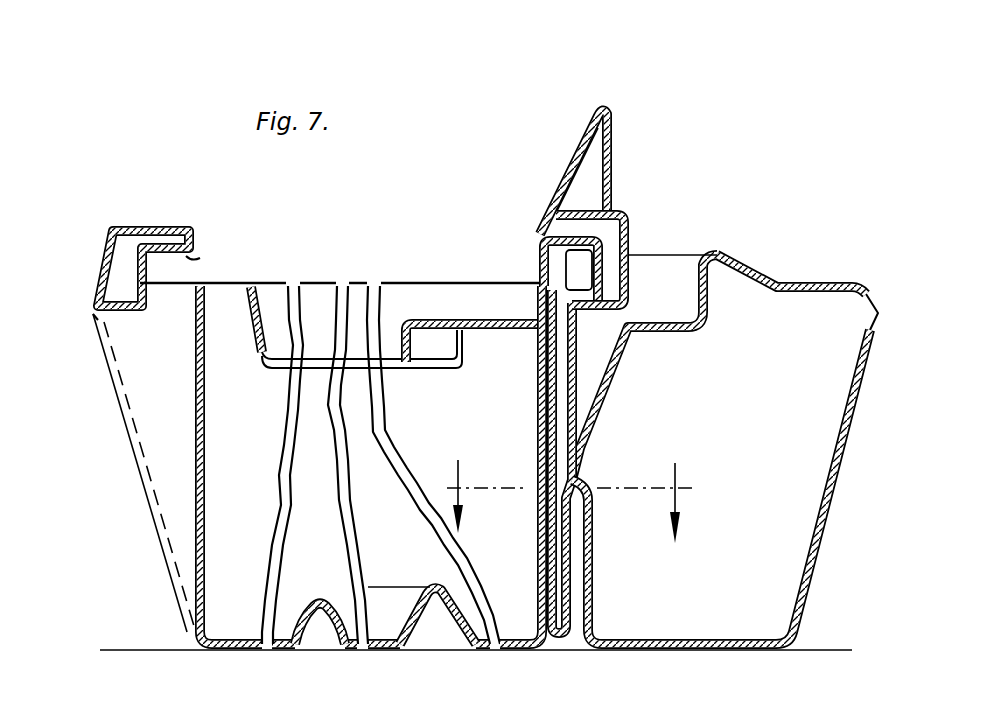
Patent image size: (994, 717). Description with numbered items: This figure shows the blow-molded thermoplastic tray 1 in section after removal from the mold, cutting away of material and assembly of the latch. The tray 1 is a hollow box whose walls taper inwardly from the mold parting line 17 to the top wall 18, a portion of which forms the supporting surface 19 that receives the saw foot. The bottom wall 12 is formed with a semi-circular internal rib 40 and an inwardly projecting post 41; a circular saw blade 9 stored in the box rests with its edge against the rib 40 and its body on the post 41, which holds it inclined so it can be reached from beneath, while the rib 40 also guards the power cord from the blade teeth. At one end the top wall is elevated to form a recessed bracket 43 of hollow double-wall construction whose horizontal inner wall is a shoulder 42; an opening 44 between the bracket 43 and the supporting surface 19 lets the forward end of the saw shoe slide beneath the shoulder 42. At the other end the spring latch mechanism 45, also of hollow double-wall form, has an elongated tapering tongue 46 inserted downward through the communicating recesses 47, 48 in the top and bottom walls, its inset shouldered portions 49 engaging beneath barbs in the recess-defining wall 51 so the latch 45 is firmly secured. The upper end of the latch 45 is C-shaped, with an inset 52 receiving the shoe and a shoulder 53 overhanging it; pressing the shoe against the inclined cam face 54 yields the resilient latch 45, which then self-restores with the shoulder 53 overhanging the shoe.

The tray 1 is at (884, 234).
The circular saw blade 9 is at (568, 499).
The bottom wall 12 is at (245, 652).
The mold parting line 17 is at (92, 312).
The top wall 18 is at (286, 284).
The supporting surface 19 is at (453, 320).
The semi-circular internal rib 40 is at (423, 587).
The post 41 is at (327, 575).
The shoulder 42 is at (188, 258).
The recessed bracket 43 is at (140, 230).
The opening 44 is at (167, 268).
The spring latch mechanism 45 is at (683, 112).
The tongue 46 is at (580, 342).
The recess 47 is at (600, 377).
The recess 48 is at (583, 592).
The inset shouldered portions 49 is at (572, 468).
The recess-defining wall 51 is at (538, 400).
The inset 52 is at (572, 263).
The shoulder 53 is at (548, 247).
The inclined cam face 54 is at (576, 146).